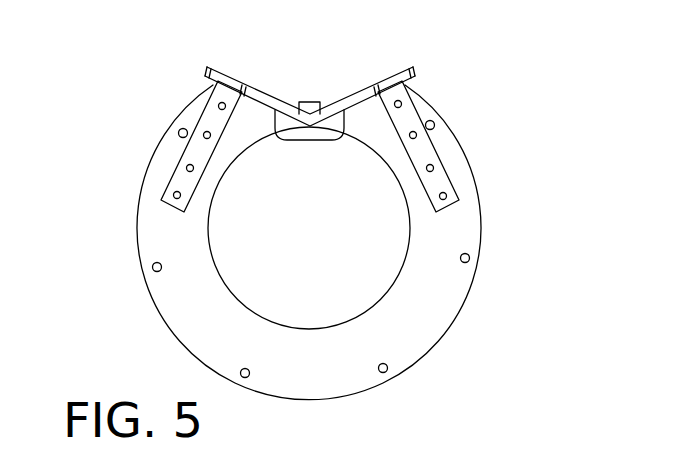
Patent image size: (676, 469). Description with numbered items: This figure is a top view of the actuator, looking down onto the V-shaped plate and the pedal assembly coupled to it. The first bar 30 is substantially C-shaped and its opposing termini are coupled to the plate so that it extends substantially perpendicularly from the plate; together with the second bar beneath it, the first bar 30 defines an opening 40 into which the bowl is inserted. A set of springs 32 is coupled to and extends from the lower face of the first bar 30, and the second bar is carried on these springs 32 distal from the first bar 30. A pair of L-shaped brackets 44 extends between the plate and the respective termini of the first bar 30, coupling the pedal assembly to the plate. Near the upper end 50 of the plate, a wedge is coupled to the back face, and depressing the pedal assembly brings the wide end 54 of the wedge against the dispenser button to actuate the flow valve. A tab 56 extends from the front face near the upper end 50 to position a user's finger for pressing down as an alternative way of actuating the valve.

The first bar 30 is at (437, 280).
The springs 32 is at (180, 136).
The opening 40 is at (325, 242).
The brackets 44 is at (187, 182).
The upper end 50 is at (362, 90).
The wide end 54 is at (308, 109).
The tab 56 is at (286, 127).